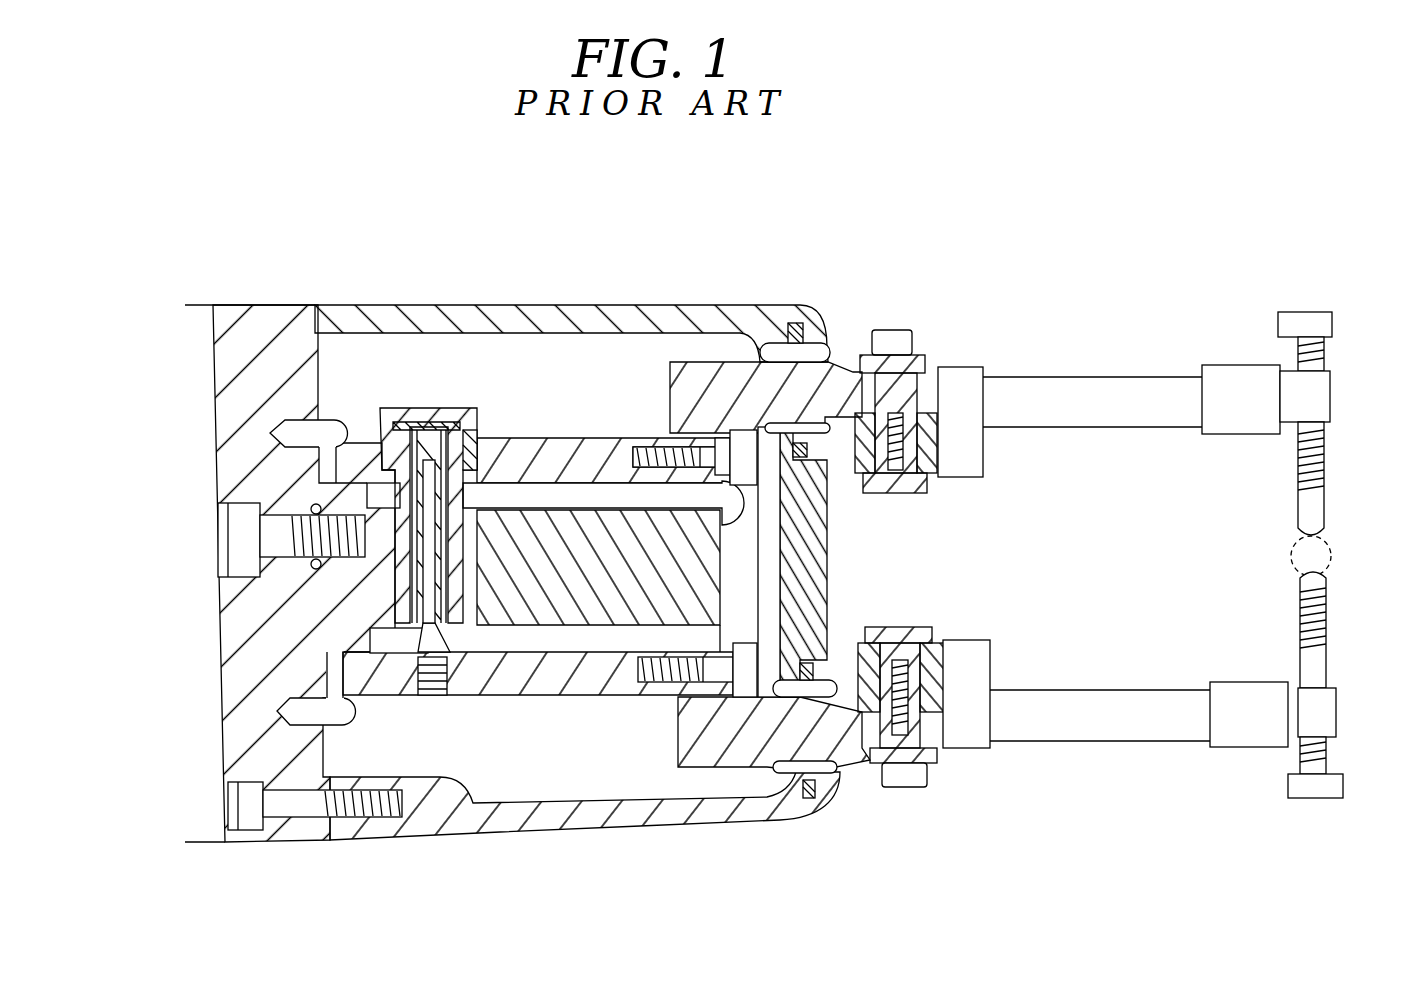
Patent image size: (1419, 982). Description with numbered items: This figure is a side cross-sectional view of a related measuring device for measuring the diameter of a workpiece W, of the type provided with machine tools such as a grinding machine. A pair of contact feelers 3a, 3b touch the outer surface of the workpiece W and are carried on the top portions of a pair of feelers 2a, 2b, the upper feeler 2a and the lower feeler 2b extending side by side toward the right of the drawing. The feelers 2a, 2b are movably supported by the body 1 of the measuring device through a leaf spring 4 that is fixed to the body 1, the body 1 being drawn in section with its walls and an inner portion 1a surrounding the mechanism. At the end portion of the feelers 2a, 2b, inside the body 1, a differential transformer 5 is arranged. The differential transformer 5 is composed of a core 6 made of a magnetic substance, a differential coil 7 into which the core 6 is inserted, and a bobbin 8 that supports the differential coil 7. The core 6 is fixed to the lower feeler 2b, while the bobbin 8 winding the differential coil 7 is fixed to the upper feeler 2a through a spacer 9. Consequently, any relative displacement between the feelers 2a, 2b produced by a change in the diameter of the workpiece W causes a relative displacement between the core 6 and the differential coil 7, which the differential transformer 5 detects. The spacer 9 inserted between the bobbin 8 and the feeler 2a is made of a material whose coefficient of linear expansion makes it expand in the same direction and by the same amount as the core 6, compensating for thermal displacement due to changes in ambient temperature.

The body 1 is at (278, 313).
The housing body 1a is at (586, 603).
The upper feeler 2a is at (1085, 390).
The lower feeler 2b is at (1095, 706).
The contact feeler 3a is at (1322, 468).
The contact feeler 3b is at (1322, 620).
The leaf spring 4 is at (750, 527).
The differential transformer 5 is at (474, 551).
The core 6 is at (430, 460).
The differential coil 7 is at (443, 623).
The bobbin 8 is at (403, 412).
The spacer 9 is at (480, 437).
The workpiece W is at (1330, 548).